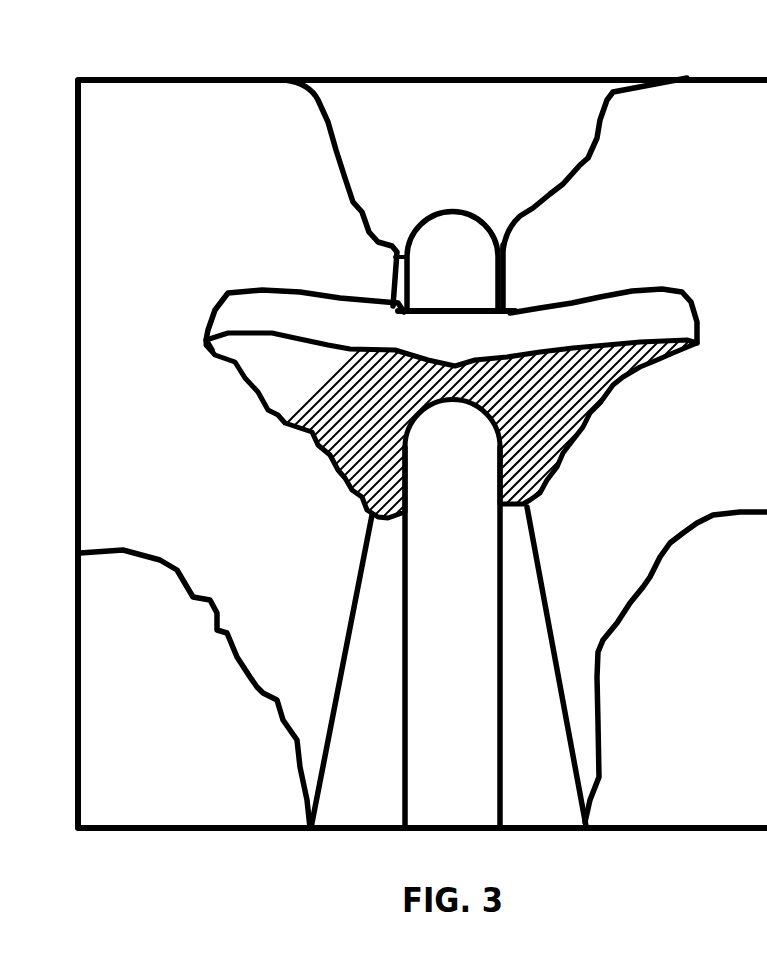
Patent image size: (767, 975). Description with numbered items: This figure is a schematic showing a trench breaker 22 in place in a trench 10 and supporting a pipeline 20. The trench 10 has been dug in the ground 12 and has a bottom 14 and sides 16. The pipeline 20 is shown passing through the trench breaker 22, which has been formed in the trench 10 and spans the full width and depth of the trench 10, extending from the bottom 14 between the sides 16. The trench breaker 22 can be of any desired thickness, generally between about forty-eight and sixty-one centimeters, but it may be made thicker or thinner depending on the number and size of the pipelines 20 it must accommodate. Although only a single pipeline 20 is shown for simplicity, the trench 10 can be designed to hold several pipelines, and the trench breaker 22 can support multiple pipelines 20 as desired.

The trench 10 is at (458, 146).
The ground 12 is at (177, 712).
The bottom 14 is at (371, 805).
The sides 16 is at (290, 546).
The pipeline 20 is at (480, 267).
The trench breaker 22 is at (645, 365).